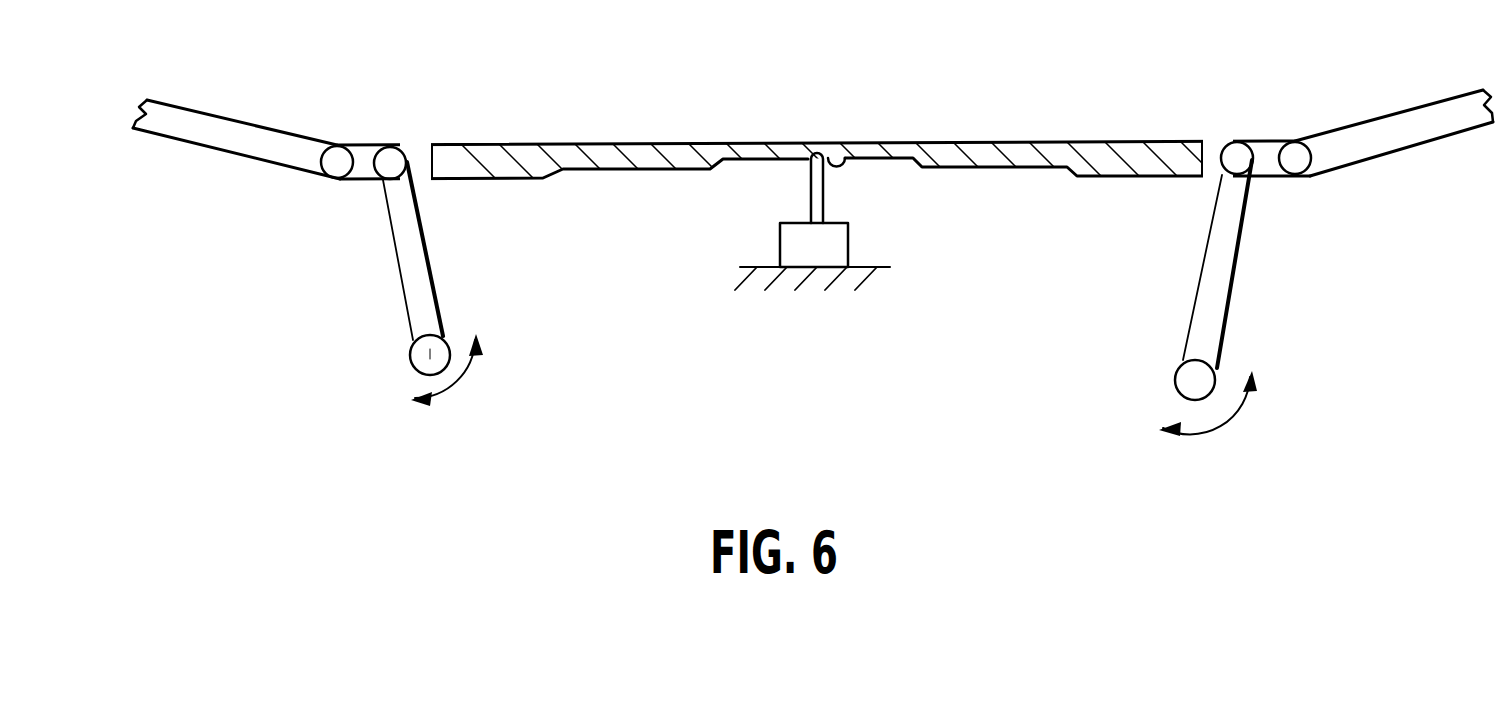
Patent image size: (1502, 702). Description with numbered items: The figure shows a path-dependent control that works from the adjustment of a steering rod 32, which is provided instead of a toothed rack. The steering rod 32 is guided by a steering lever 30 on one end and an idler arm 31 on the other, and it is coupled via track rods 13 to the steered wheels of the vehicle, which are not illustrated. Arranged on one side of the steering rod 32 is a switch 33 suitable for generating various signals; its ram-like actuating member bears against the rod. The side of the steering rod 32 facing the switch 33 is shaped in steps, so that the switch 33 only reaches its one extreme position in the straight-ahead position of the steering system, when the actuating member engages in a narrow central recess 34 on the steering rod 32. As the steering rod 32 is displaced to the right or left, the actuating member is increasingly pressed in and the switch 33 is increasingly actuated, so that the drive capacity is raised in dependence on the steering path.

The track rod 13 is at (238, 132).
The steering lever 30 is at (402, 272).
The idler arm 31 is at (1213, 303).
The steering rod 32 is at (550, 155).
The switch 33 is at (837, 243).
The central recess 34 is at (847, 160).